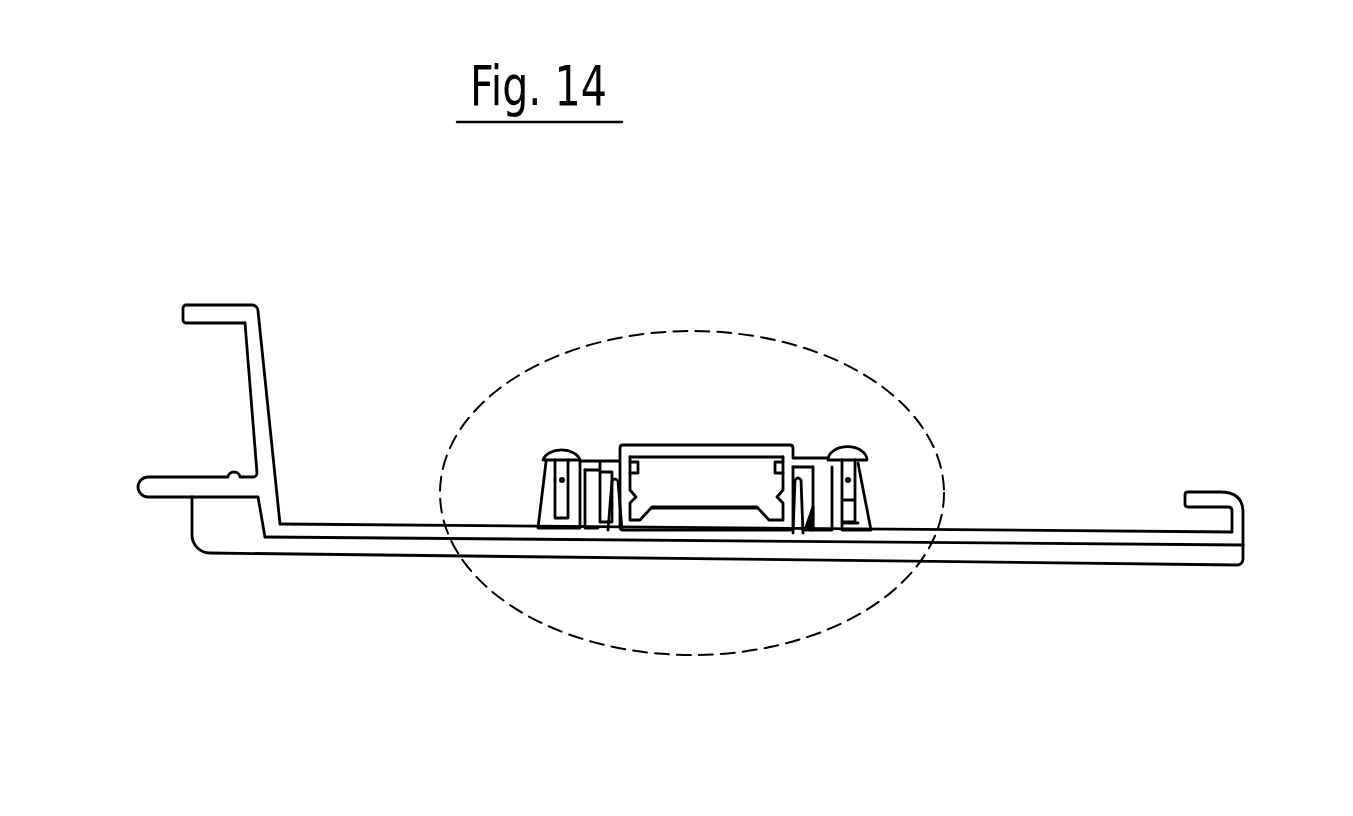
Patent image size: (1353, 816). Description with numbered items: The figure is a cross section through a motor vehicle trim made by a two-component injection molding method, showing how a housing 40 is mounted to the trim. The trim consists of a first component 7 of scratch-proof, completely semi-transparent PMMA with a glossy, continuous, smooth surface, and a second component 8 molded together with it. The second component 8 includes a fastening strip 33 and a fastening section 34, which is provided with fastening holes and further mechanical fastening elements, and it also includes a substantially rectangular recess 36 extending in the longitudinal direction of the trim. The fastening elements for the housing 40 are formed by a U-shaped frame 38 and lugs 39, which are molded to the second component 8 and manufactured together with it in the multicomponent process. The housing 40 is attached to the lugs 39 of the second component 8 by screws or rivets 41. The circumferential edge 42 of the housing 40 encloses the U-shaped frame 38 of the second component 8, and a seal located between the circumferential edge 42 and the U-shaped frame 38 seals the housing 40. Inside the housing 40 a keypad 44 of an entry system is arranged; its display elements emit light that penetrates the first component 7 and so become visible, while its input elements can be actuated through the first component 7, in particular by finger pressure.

The first component 7 is at (1150, 557).
The second component 8 is at (1120, 540).
The fastening strip 33 is at (1237, 505).
The fastening section 34 is at (262, 373).
The recess 36 is at (793, 530).
The U-shaped frame 38 is at (617, 510).
The lugs 39 is at (545, 493).
The housing 40 is at (722, 450).
The screws or rivets 41 is at (558, 453).
The circumferential edge 42 is at (600, 482).
The keypad 44 is at (697, 520).